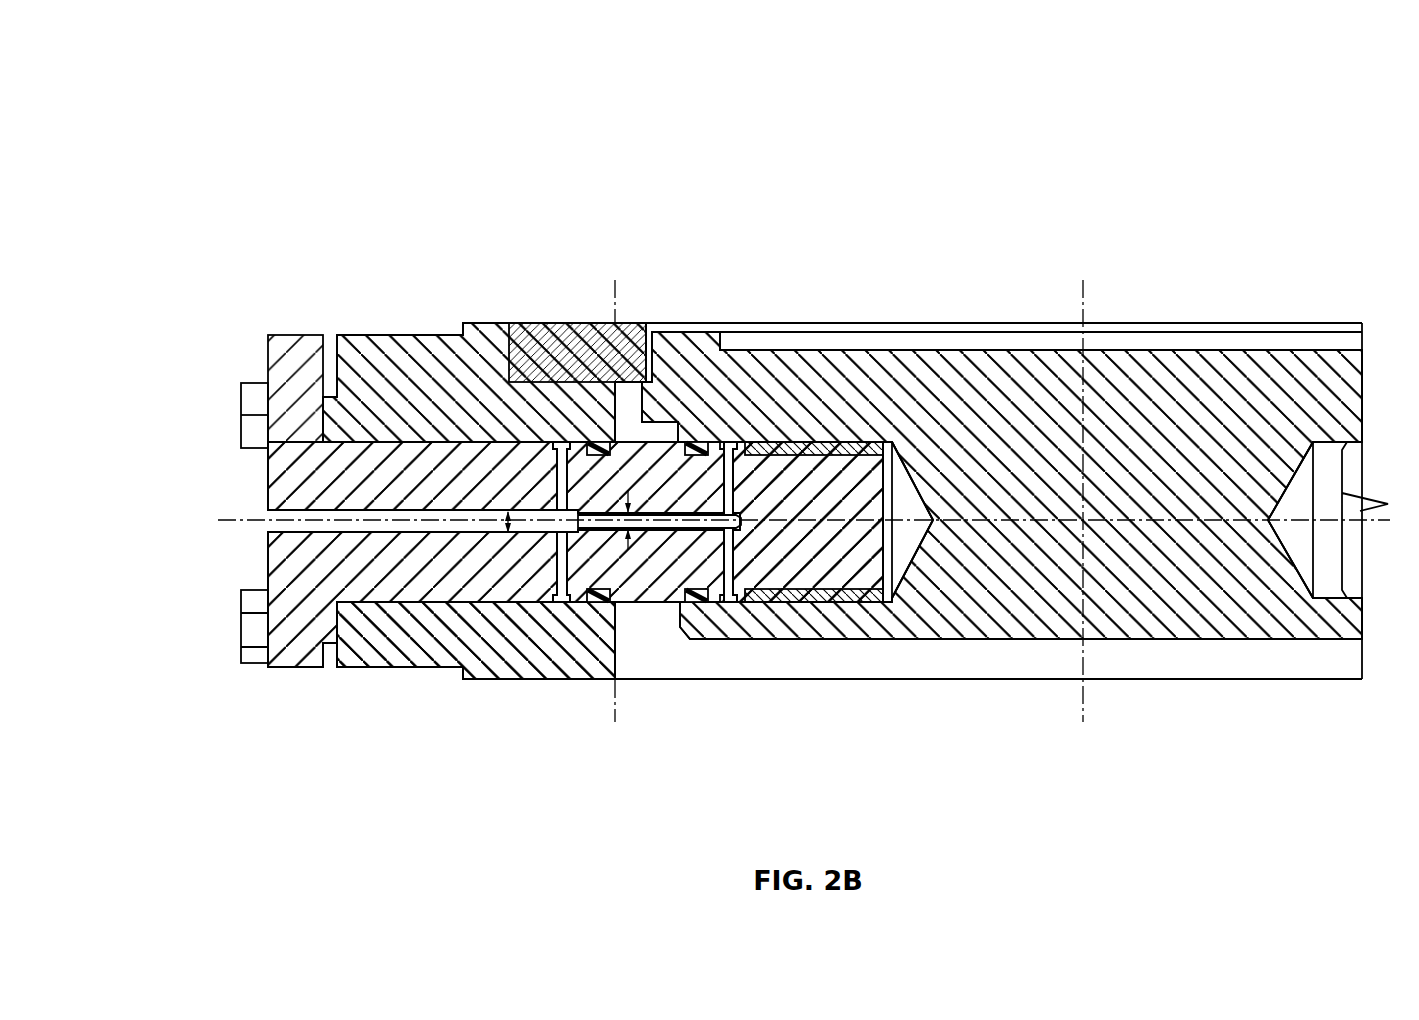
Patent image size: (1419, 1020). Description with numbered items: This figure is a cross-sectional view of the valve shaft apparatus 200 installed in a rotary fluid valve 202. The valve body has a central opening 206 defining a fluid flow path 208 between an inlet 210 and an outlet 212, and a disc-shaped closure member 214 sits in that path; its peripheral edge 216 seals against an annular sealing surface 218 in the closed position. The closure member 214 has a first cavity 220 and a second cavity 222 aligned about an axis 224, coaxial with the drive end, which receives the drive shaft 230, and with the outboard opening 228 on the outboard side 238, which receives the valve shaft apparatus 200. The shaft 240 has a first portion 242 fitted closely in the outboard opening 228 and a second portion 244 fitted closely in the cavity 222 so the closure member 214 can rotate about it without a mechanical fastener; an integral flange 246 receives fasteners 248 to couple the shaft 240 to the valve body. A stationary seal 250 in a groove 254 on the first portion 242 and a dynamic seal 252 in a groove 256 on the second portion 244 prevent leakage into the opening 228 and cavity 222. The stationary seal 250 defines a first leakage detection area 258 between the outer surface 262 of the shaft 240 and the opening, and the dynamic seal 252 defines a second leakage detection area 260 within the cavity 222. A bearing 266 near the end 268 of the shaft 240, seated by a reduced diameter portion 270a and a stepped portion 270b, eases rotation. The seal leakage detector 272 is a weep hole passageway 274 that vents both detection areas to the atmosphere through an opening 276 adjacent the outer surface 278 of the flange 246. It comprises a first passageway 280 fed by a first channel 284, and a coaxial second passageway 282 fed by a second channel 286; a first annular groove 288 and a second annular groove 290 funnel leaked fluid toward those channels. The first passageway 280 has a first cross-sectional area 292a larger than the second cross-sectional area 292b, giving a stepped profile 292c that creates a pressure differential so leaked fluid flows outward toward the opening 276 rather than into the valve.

The valve shaft apparatus 200 is at (325, 270).
The rotary fluid valve 202 is at (250, 82).
The central opening 206 is at (1110, 322).
The fluid flow path 208 is at (1107, 657).
The inlet 210 is at (1320, 322).
The outlet 212 is at (1348, 679).
The closure member 214 is at (1240, 357).
The peripheral edge 216 is at (645, 412).
The annular sealing surface 218 is at (568, 322).
The first bore or cavity 220 is at (1290, 562).
The second bore or cavity 222 is at (913, 543).
The axis 224 is at (1202, 522).
The outboard opening 228 is at (492, 603).
The drive shaft 230 is at (1335, 535).
The outboard side 238 is at (258, 567).
The shaft 240 is at (402, 565).
The first portion 242 is at (445, 603).
The second portion 244 is at (843, 560).
The flange 246 is at (302, 335).
The fasteners 248 is at (241, 395).
The stationary seal 250 is at (605, 596).
The dynamic seal 252 is at (700, 602).
The groove 254 is at (615, 535).
The groove 256 is at (719, 430).
The first leakage detection area 258 is at (566, 430).
The second leakage detection area 260 is at (742, 432).
The outer surface 262 is at (392, 447).
The bearing 266 is at (878, 510).
The end 268 is at (903, 500).
The reduced diameter portion 270a is at (880, 440).
The stepped or flanged portion 270b is at (752, 602).
The seal leakage detector 272 is at (648, 412).
The passageway 274 is at (350, 540).
The opening 276 is at (268, 510).
The outer surface 278 is at (267, 467).
The first passageway 280 is at (322, 510).
The second passageway 282 is at (712, 523).
The first channel 284 is at (523, 477).
The second channel 286 is at (770, 442).
The first annular groove 288 is at (562, 602).
The second annular groove 290 is at (700, 528).
The first cross-sectional area 292a is at (570, 517).
The second cross-sectional area 292b is at (637, 522).
The stepped profile 292c is at (556, 500).